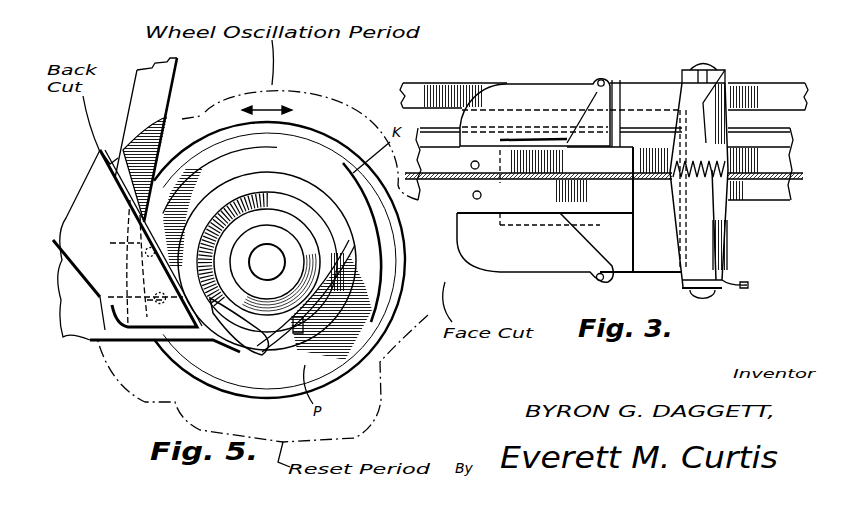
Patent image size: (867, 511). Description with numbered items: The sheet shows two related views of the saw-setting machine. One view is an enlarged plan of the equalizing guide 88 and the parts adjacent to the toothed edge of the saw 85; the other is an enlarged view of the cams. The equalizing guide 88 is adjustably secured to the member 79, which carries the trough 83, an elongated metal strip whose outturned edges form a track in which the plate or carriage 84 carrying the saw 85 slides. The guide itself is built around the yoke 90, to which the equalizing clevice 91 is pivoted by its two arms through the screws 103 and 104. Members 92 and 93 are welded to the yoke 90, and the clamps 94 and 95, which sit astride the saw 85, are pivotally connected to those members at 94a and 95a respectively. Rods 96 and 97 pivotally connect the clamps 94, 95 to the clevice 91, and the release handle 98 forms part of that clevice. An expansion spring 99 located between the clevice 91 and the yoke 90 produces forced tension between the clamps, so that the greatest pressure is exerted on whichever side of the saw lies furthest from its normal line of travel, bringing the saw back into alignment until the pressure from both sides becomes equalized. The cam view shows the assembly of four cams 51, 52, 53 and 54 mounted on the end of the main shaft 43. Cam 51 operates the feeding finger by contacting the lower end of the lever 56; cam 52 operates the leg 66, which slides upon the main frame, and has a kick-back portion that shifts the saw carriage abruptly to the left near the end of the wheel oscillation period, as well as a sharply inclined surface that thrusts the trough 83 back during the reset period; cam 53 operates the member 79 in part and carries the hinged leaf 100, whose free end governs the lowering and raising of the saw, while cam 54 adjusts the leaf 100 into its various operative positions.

In FIG. 5, the main shaft 43 is at (268, 250).
In FIG. 5, the cam 54 is at (327, 268).
In FIG. 5, the cam 52 is at (340, 368).
In FIG. 5, the cam 53 is at (237, 345).
In FIG. 5, the hinged leaf 100 is at (295, 345).
In FIG. 5, the lever 56 is at (170, 93).
In FIG. 5, the member 79 is at (100, 153).
In FIG. 3, the member 79 is at (438, 87).
In FIG. 5, the cam 51 is at (130, 332).
In FIG. 5, the leg 66 is at (80, 338).
In FIG. 3, the trough 83 is at (763, 130).
In FIG. 3, the member 93 is at (537, 92).
In FIG. 3, the equalizing guide 88 is at (575, 83).
In FIG. 3, the rod 97 is at (640, 82).
In FIG. 3, the clamp 95 is at (605, 108).
In FIG. 3, the pivotal connection 95a is at (471, 165).
In FIG. 3, the pivotal connection 94a is at (473, 196).
In FIG. 3, the clamp 94 is at (590, 247).
In FIG. 3, the member 92 is at (560, 275).
In FIG. 3, the rod 96 is at (657, 277).
In FIG. 3, the saw 85 is at (790, 181).
In FIG. 3, the plate or carriage 84 is at (767, 181).
In FIG. 3, the screw 104 is at (697, 65).
In FIG. 3, the equalizing clevice 91 is at (703, 103).
In FIG. 3, the expansion spring 99 is at (688, 197).
In FIG. 3, the yoke 90 is at (727, 233).
In FIG. 3, the release handle 98 is at (748, 286).
In FIG. 3, the screw 103 is at (702, 297).